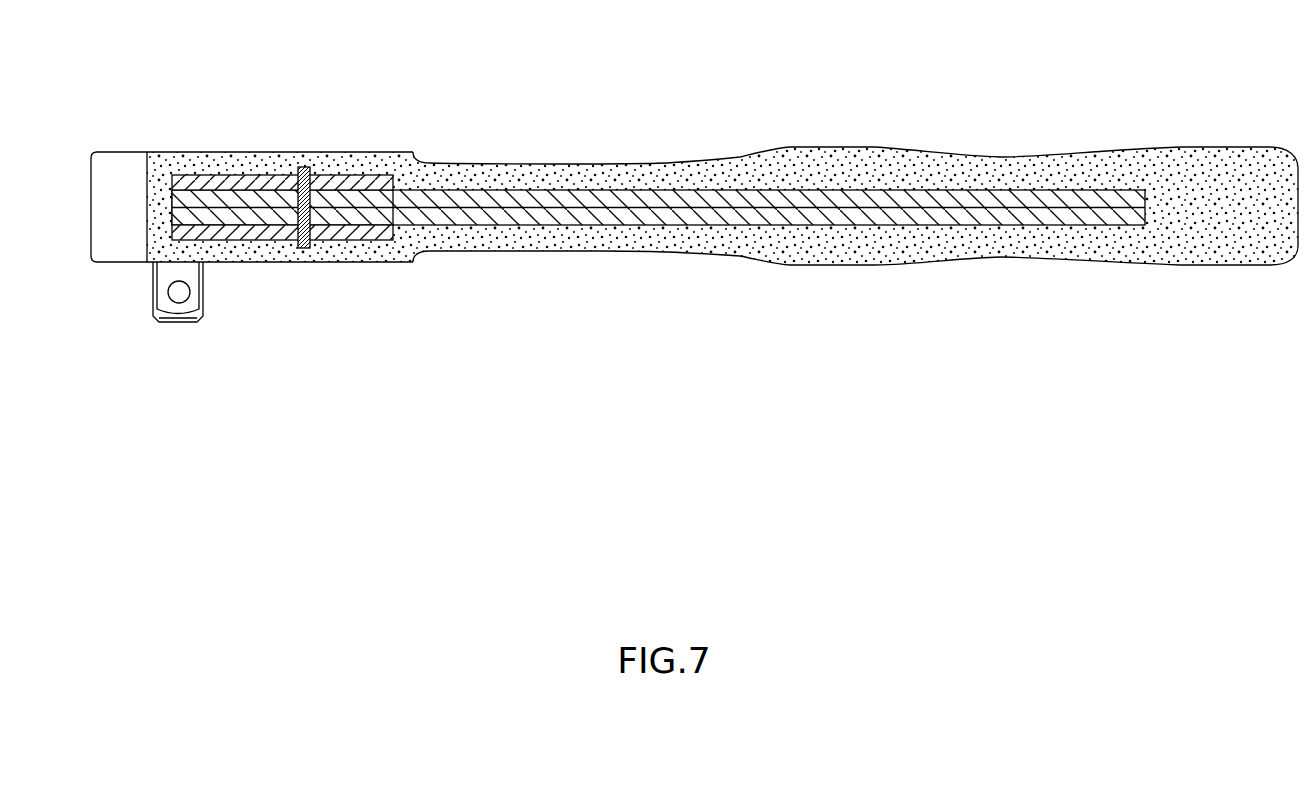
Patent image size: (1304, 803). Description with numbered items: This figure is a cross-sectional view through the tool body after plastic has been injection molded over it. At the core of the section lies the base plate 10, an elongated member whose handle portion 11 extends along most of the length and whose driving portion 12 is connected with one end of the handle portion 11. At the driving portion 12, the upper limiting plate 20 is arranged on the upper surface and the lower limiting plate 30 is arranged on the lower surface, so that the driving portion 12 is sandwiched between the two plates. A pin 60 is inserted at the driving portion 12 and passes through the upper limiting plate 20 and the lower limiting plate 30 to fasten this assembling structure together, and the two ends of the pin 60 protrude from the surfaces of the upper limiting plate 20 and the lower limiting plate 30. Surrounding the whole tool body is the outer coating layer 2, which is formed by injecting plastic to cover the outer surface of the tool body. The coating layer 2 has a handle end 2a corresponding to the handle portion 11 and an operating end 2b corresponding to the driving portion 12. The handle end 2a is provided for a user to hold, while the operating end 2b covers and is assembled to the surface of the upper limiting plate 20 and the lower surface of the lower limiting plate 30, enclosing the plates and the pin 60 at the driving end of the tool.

The base plate 10 is at (694, 240).
The handle portion 11 is at (760, 202).
The driving portion 12 is at (250, 192).
The upper limiting plate 20 is at (194, 182).
The lower limiting plate 30 is at (235, 238).
The pin 60 is at (305, 168).
The outer coating layer 2 is at (692, 300).
The handle end 2a is at (825, 269).
The operating end 2b is at (385, 250).